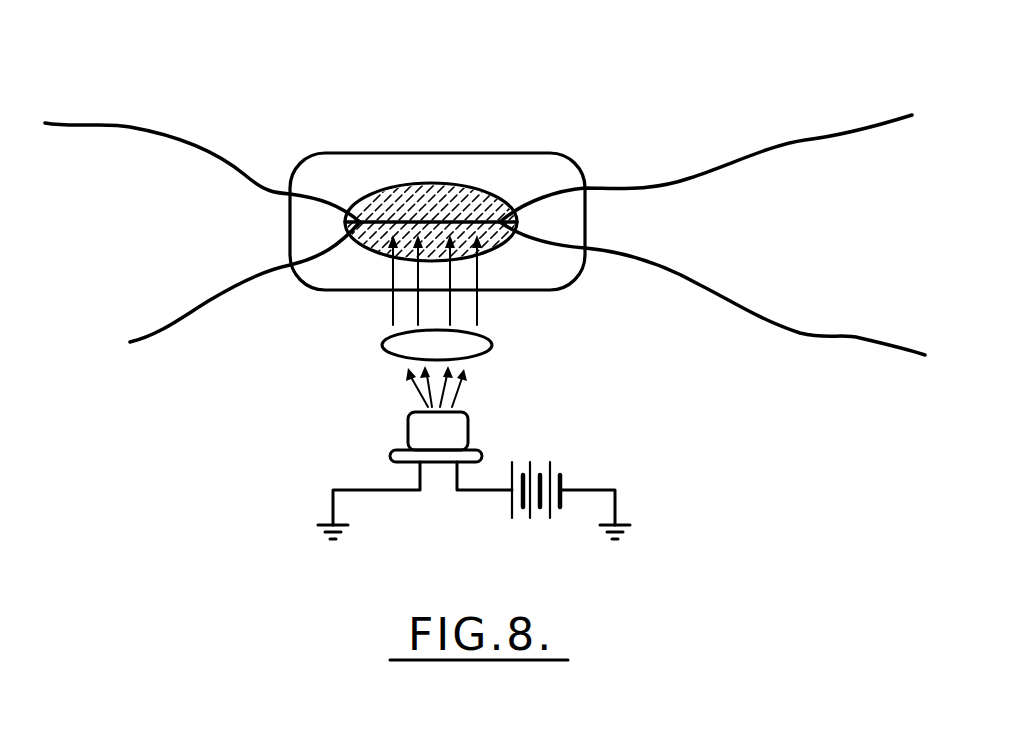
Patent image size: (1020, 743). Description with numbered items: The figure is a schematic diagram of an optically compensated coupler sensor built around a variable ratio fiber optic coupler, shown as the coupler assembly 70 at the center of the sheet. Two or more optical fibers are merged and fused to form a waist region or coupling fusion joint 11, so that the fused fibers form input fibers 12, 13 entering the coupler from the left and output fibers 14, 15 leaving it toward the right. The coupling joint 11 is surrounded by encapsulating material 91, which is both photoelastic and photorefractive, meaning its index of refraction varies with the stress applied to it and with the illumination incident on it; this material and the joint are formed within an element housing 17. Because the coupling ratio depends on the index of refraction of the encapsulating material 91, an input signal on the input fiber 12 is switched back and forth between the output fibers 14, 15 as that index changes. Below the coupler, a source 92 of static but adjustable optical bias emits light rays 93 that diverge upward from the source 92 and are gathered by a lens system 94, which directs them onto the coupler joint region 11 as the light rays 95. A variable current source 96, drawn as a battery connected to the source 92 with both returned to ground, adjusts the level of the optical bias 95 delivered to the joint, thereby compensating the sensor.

The optical fiber coupler assembly 70 is at (394, 112).
The element housing 17 is at (577, 157).
The encapsulating material 91 is at (484, 186).
The coupling fusion joint 11 is at (423, 222).
The input fiber 12 is at (131, 125).
The input fiber 13 is at (207, 300).
The output fiber 14 is at (806, 140).
The output fiber 15 is at (738, 298).
The light rays 95 is at (382, 304).
The lens system 94 is at (494, 344).
The light rays 93 is at (478, 389).
The source of static but adjustable optical bias 92 is at (407, 432).
The variable current source 96 is at (562, 478).